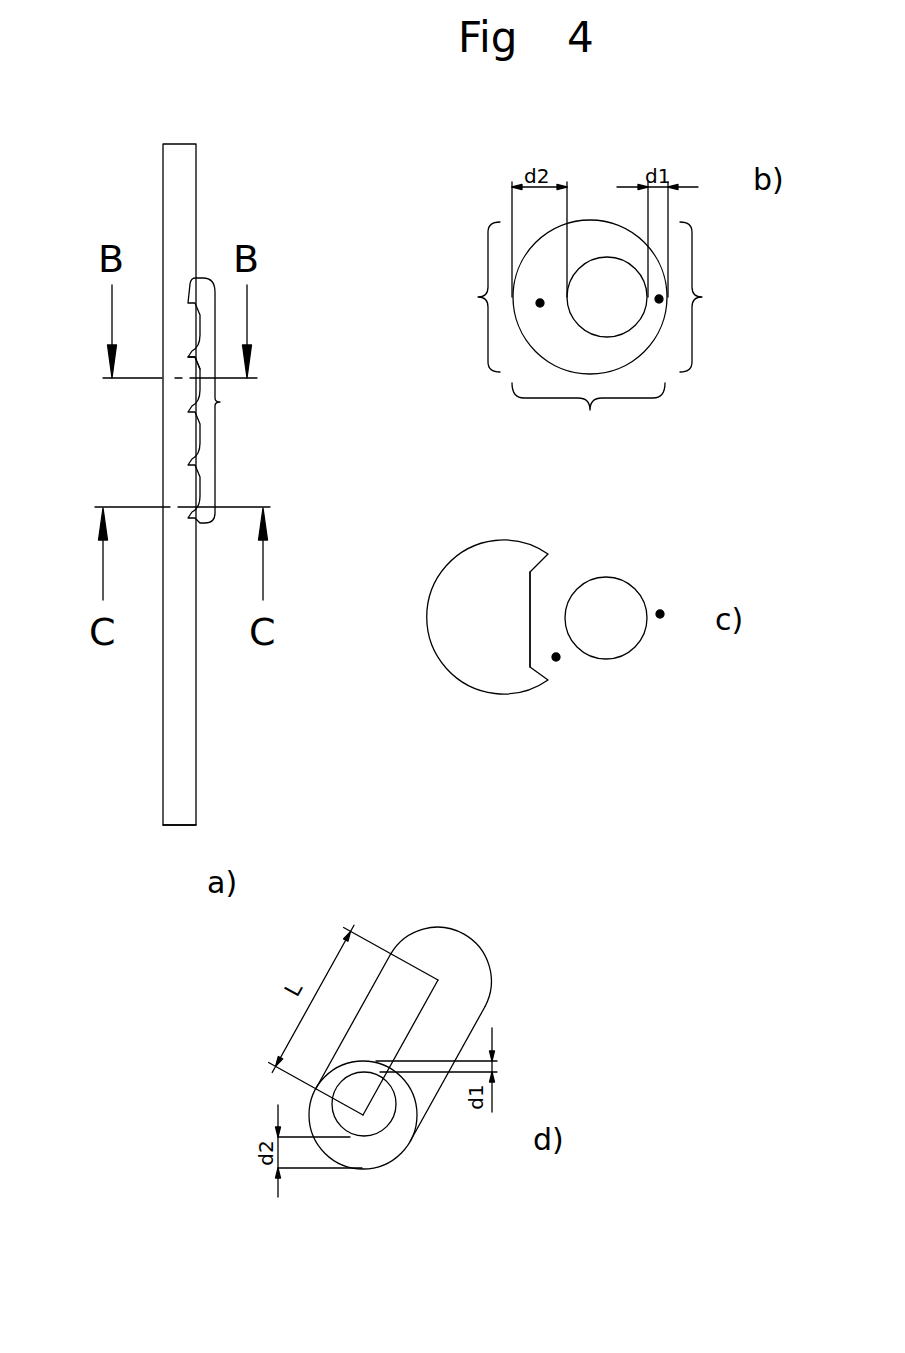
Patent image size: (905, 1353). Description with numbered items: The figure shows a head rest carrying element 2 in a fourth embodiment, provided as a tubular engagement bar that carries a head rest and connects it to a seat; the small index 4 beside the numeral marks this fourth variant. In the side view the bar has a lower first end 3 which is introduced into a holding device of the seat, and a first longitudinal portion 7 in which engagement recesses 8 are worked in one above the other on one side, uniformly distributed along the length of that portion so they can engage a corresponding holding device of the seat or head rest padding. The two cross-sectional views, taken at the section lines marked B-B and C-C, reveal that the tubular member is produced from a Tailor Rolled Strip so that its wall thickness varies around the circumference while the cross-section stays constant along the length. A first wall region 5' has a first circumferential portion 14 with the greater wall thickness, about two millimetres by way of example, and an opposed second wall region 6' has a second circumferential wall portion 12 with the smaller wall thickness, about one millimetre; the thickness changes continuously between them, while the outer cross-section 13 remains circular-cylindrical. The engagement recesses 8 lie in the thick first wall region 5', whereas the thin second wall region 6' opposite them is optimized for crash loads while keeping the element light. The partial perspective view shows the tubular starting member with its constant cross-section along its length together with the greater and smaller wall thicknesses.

The head rest carrying element 2 is at (140, 100).
The fourth embodiment index 4 is at (150, 165).
The lower first end 3 is at (151, 833).
The first longitudinal portion 7 is at (217, 402).
The engagement recesses 8 is at (208, 345).
The first wall region 5' is at (497, 515).
The second wall region 6' is at (706, 426).
The second circumferential wall portion 12 is at (702, 297).
The outer cross-section 13 is at (588, 414).
The first circumferential portion 14 is at (478, 297).